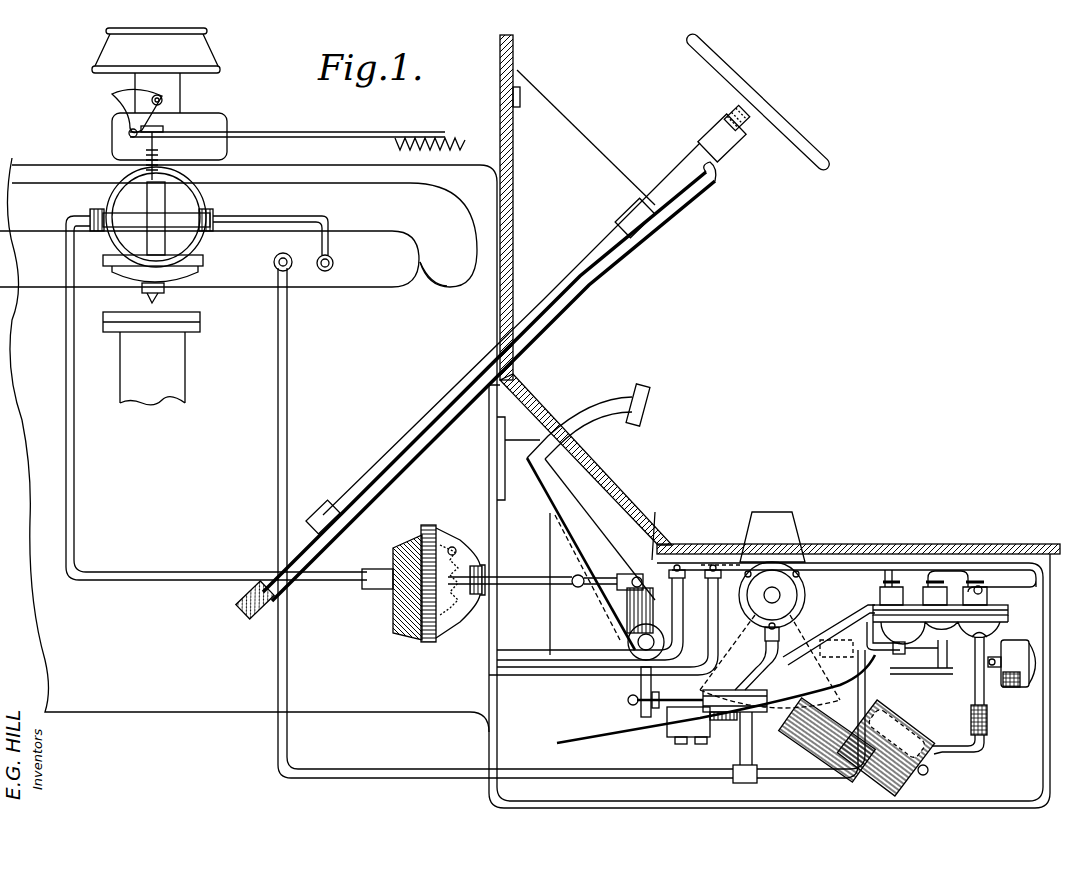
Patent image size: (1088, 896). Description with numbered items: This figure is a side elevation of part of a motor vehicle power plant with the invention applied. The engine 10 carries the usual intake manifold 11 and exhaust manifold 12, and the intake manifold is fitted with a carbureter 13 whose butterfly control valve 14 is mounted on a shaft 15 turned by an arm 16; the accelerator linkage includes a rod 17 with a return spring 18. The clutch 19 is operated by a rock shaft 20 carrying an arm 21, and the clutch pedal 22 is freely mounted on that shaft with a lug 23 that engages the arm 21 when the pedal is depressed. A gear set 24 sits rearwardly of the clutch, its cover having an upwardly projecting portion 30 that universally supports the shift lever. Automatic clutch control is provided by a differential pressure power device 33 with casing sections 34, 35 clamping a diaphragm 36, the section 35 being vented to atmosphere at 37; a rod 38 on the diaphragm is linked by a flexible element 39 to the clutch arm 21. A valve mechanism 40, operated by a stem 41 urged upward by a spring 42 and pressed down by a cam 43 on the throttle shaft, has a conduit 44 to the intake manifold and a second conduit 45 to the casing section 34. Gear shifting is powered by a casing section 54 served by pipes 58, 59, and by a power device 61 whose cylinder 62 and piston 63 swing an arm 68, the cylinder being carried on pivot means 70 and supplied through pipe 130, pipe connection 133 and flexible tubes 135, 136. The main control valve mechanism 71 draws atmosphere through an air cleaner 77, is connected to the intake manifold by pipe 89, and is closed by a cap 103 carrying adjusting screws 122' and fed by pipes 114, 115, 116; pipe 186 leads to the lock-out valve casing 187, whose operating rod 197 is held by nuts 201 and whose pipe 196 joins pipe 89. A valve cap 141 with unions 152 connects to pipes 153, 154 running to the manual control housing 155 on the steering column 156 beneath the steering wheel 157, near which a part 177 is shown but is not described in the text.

The motor vehicle engine 10 is at (348, 166).
The intake manifold 11 is at (357, 290).
The exhaust manifold 12 is at (444, 284).
The carbureter 13 is at (218, 113).
The butterfly control valve 14 is at (160, 97).
The shaft 15 is at (163, 100).
The arm 16 is at (128, 131).
The rod 17 is at (364, 132).
The return spring 18 is at (463, 145).
The clutch 19 is at (612, 498).
The rock shaft 20 is at (624, 636).
The arm 21 is at (630, 610).
The clutch pedal 22 is at (604, 418).
The lug 23 is at (655, 512).
The gear set 24 is at (832, 563).
The upwardly projecting portion 30 is at (790, 520).
The differential pressure power device 33 is at (424, 635).
The casing section 34 is at (400, 614).
The casing section 35 is at (450, 638).
The diaphragm 36 is at (452, 547).
The vent 37 is at (466, 552).
The rod 38 is at (516, 577).
The cable or flexible element 39 is at (575, 577).
The valve mechanism 40 is at (203, 245).
The stem 41 is at (165, 140).
The spring 42 is at (148, 165).
The cam 43 is at (113, 96).
The conduit 44 is at (275, 219).
The second conduit 45 is at (72, 433).
The casing section 54 is at (796, 562).
The pipe 58 is at (930, 670).
The pipe 59 is at (790, 680).
The power device 61 is at (871, 790).
The cylinder 62 is at (806, 752).
The piston 63 is at (885, 748).
The arm 68 is at (706, 620).
The pivot means 70 is at (928, 774).
The main control valve mechanism 71 is at (1014, 610).
The air cleaner 77 is at (1018, 684).
The pipe or conduit 89 is at (325, 780).
The cap 103 is at (1000, 604).
The pipe 114 is at (866, 563).
The pipe 115 is at (975, 568).
The pipe 116 is at (486, 686).
The adjusting screws 122' is at (1003, 582).
The pipe 130 is at (972, 662).
The pipe connection 133 is at (942, 748).
The flexible tube 135 is at (988, 722).
The flexible tube 136 is at (843, 636).
The valve cap 141 is at (703, 563).
The unions 152 is at (677, 562).
The pipe 153 is at (628, 647).
The pipe 154 is at (618, 666).
The housing 155 is at (735, 160).
The steering column 156 is at (603, 244).
The steering wheel 157 is at (822, 170).
The hub control 177 is at (752, 118).
The pipe 186 is at (830, 622).
The cylindrical casing 187 is at (765, 714).
The pipe 196 is at (740, 756).
The operating rod 197 is at (672, 722).
The nuts 201 is at (640, 706).